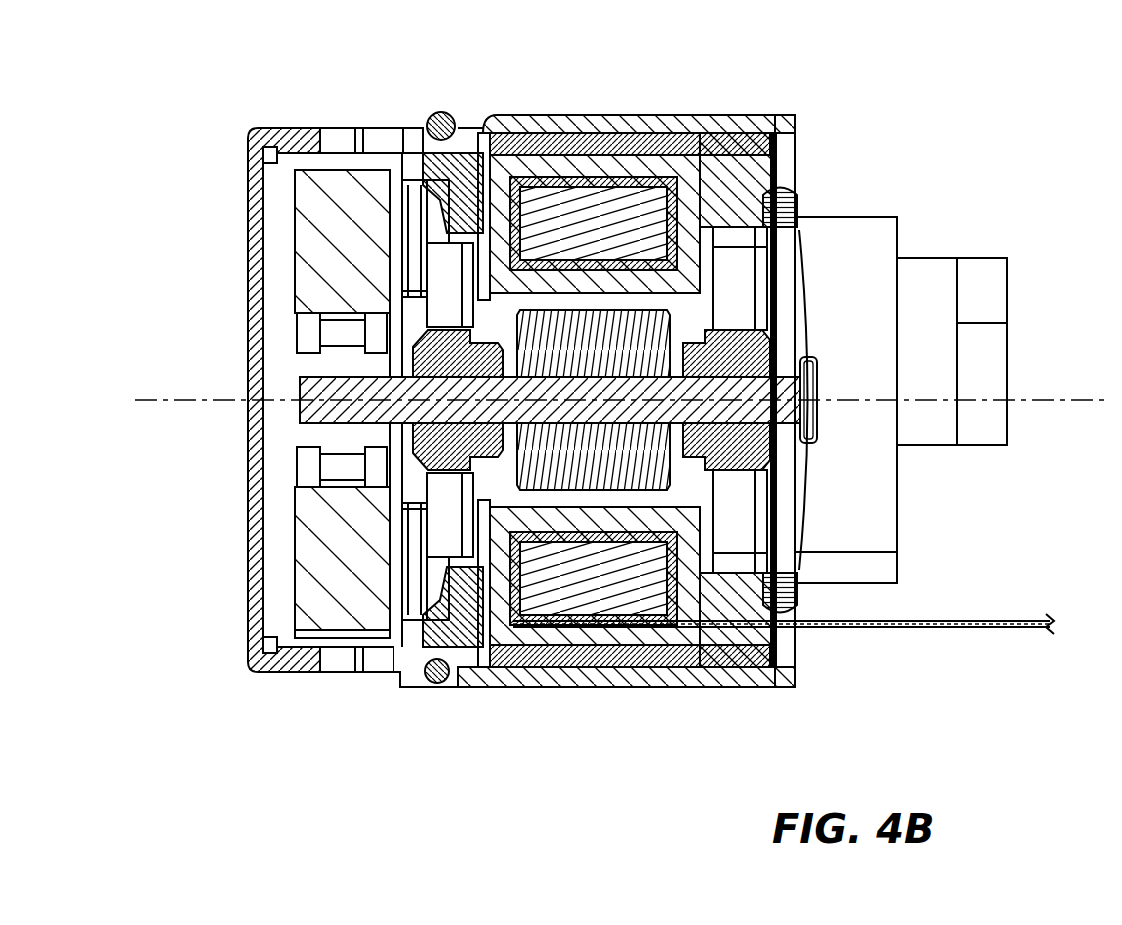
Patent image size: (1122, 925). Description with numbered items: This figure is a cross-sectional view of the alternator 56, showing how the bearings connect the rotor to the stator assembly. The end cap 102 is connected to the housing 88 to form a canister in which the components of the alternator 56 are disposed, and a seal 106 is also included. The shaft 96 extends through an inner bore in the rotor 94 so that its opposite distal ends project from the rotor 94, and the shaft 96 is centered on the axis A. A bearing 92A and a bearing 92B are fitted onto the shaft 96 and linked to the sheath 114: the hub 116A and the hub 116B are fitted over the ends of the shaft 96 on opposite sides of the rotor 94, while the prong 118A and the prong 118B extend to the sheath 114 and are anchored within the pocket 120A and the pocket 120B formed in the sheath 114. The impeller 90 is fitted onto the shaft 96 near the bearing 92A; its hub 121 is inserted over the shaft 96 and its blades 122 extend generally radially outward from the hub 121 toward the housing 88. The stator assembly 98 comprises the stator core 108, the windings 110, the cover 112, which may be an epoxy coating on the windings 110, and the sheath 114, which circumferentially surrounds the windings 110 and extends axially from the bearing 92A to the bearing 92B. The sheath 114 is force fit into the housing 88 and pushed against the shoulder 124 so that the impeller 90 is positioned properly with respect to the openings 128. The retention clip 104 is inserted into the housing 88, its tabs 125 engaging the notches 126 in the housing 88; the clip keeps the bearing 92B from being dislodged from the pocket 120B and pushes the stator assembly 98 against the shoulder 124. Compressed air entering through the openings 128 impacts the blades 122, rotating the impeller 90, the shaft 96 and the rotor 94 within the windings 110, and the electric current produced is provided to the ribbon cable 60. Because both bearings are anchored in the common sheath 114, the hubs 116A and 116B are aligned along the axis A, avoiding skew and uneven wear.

The alternator 56 is at (900, 145).
The ribbon cable 60 is at (933, 627).
The housing 88 is at (598, 673).
The impeller 90 is at (298, 195).
The bearing 92A is at (412, 346).
The bearing 92B is at (778, 344).
The rotor 94 is at (605, 338).
The shaft 96 is at (312, 388).
The stator assembly 98 is at (659, 160).
The end cap 102 is at (268, 128).
The retention clip 104 is at (797, 481).
The seal 106 is at (443, 112).
The stator core 108 is at (572, 585).
The windings 110 is at (528, 580).
The cover 112 is at (558, 165).
The sheath 114 is at (477, 625).
The hub 116A is at (452, 468).
The hub 116B is at (748, 525).
The prong 118A is at (440, 277).
The prong 118B is at (730, 277).
The pocket 120A is at (475, 215).
The pocket 120B is at (778, 258).
The hub 121 is at (312, 368).
The blades 122 is at (327, 258).
The shoulder 124 is at (412, 262).
The tabs 125 is at (803, 418).
The notches 126 is at (812, 356).
The openings 128 is at (360, 128).
The axis A is at (1043, 398).